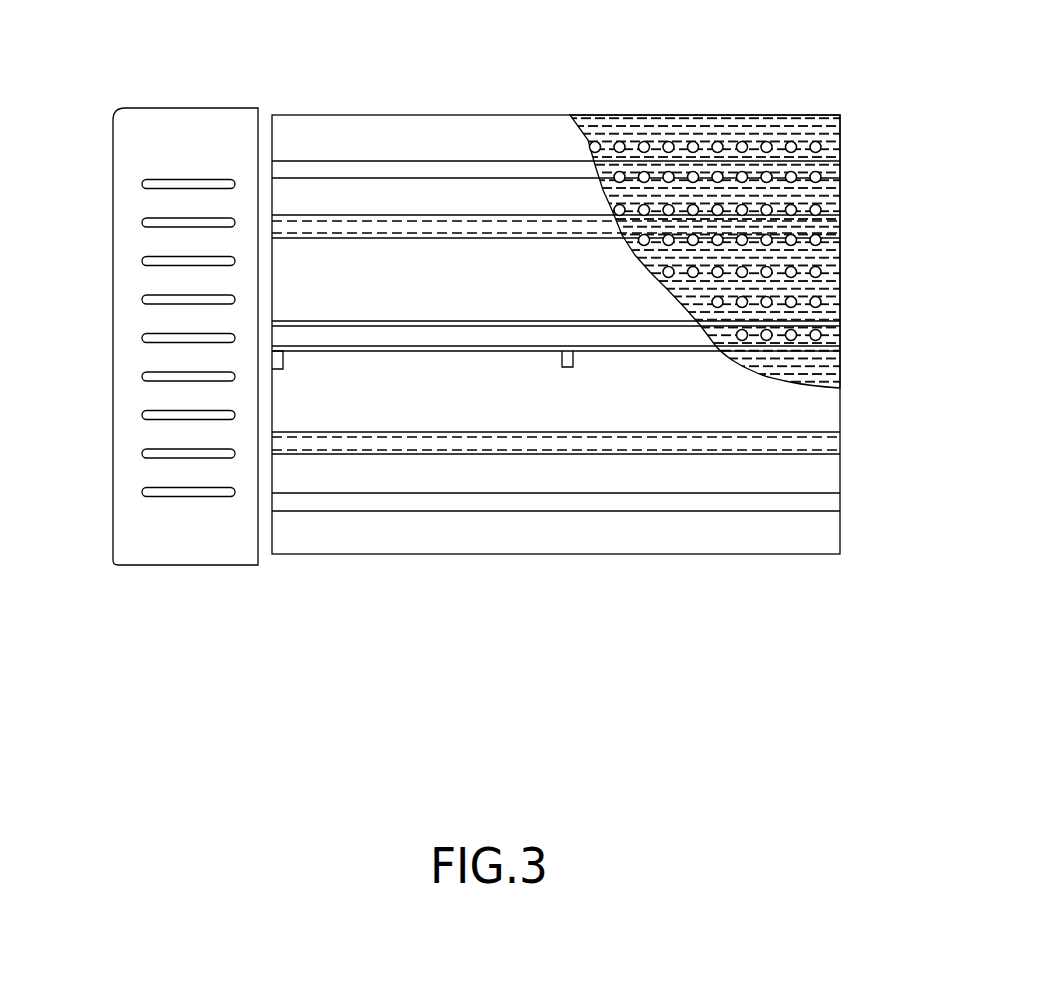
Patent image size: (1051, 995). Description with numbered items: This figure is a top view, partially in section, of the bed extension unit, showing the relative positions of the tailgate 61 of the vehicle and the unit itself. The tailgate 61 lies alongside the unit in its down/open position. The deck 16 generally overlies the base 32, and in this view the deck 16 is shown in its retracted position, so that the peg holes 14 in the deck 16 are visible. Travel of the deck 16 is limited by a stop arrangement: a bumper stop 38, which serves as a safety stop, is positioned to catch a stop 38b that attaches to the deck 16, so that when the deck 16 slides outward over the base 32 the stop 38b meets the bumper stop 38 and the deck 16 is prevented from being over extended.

The peg holes 14 is at (692, 142).
The deck 16 is at (840, 224).
The base 32 is at (823, 554).
The bumper stop 38 is at (283, 369).
The stop 38b is at (573, 367).
The tailgate 61 is at (157, 541).